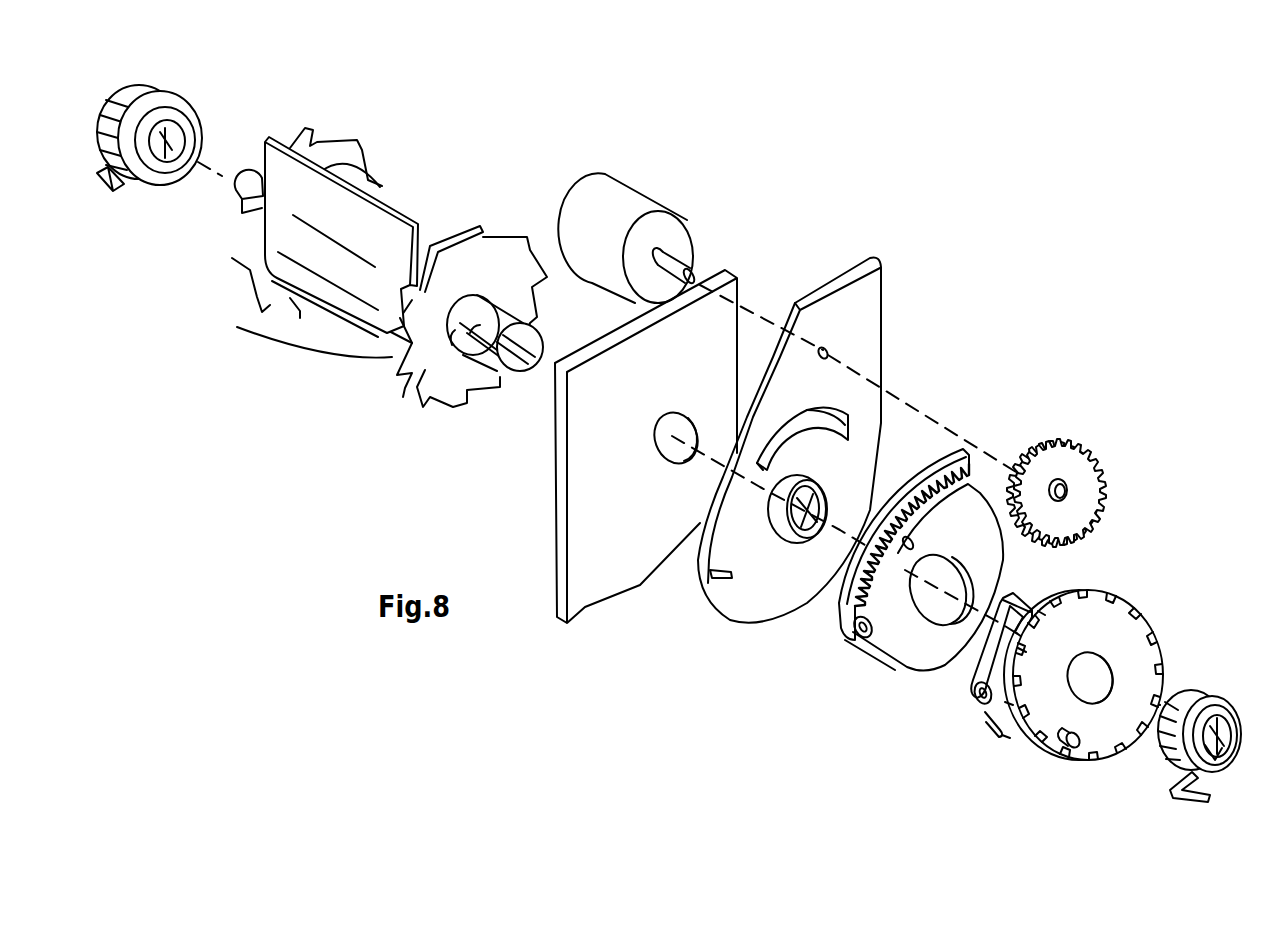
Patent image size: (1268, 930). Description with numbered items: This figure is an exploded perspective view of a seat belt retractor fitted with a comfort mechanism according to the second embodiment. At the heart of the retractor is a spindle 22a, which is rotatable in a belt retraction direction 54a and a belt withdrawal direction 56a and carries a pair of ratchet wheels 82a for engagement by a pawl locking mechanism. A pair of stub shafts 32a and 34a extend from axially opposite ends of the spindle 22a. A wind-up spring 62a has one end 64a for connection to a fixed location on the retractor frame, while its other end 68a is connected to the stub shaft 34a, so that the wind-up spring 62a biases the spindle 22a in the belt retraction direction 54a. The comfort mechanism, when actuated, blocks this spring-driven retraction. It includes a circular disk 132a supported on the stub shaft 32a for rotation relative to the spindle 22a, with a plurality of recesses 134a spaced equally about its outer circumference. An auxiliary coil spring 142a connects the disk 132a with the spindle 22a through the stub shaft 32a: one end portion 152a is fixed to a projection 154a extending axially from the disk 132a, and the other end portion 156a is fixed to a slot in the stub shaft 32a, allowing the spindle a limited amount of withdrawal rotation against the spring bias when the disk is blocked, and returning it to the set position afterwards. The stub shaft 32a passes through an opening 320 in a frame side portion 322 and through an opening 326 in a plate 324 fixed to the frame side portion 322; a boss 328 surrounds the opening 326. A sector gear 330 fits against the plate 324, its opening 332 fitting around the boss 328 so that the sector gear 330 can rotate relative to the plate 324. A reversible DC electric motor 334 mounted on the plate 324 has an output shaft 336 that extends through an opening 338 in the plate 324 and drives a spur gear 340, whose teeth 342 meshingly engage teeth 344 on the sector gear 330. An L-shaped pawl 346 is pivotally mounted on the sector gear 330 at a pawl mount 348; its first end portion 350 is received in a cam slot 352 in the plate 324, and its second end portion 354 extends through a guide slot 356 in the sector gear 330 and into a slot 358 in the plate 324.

The spindle 22a is at (343, 251).
The stub shaft 32a is at (483, 307).
The stub shaft 34a is at (245, 178).
The belt retraction direction 54a is at (418, 352).
The belt withdrawal direction 56a is at (452, 395).
The wind-up spring 62a is at (190, 98).
The end of wind-up spring 64a is at (107, 186).
The other end of wind-up spring 68a is at (172, 175).
The ratchet wheels 82a is at (257, 277).
The circular disk 132a is at (1127, 688).
The recesses 134a is at (1150, 622).
The auxiliary coil spring 142a is at (1165, 743).
The end portion of auxiliary spring 152a is at (1208, 805).
The projection 154a is at (1068, 750).
The other end portion of auxiliary spring 156a is at (1218, 727).
The opening 320 is at (677, 460).
The frame side portion 322 is at (578, 522).
The plate 324 is at (868, 298).
The opening 326 is at (859, 523).
The boss 328 is at (798, 537).
The sector gear 330 is at (990, 586).
The opening 332 is at (965, 578).
The DC reversible electric motor 334 is at (627, 207).
The output shaft 336 is at (672, 268).
The opening 338 is at (825, 347).
The spur gear 340 is at (1092, 461).
The teeth 342 is at (1080, 487).
The teeth 344 is at (928, 485).
The L-shaped pawl 346 is at (1025, 599).
The pawl mount 348 is at (855, 633).
The first end portion of pawl 350 is at (980, 722).
The cam slot 352 is at (730, 585).
The second end portion of pawl 354 is at (1010, 602).
The guide slot 356 is at (1000, 560).
The slot 358 is at (850, 413).